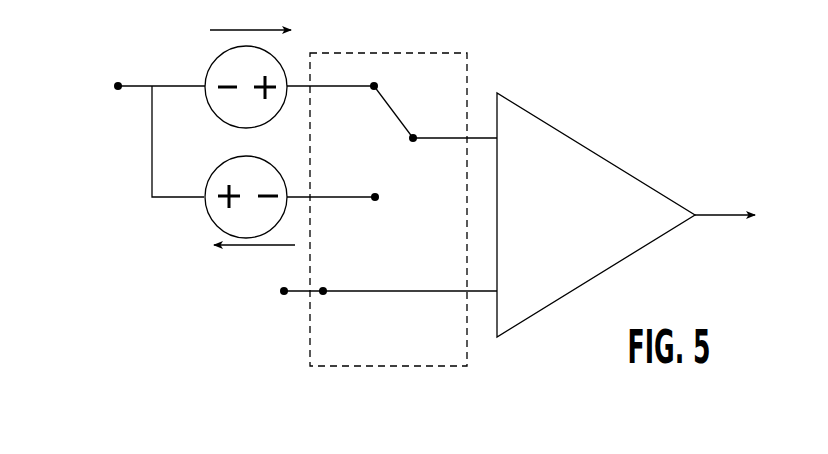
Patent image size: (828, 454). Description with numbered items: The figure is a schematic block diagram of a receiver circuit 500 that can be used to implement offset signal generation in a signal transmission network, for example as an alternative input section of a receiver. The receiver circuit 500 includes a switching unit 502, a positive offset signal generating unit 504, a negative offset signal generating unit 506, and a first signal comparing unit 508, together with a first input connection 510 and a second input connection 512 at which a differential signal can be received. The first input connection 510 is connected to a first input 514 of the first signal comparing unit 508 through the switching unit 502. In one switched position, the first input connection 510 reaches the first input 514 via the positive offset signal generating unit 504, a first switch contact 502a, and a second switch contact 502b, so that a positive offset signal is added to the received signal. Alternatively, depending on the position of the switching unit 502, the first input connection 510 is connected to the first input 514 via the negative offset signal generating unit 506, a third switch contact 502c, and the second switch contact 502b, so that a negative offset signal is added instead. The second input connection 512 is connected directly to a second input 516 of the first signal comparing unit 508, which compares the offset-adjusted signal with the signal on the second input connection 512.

The receiver circuit 500 is at (646, 81).
The switching unit 502 is at (445, 65).
The first switch contact 502a is at (376, 84).
The second switch contact 502b is at (415, 136).
The third switch contact 502c is at (378, 200).
The positive offset signal generating unit 504 is at (211, 64).
The negative offset signal generating unit 506 is at (208, 212).
The first signal comparing unit 508 is at (620, 178).
The first input connection 510 is at (114, 82).
The second input connection 512 is at (324, 295).
The first input 514 is at (500, 140).
The second input 516 is at (500, 289).